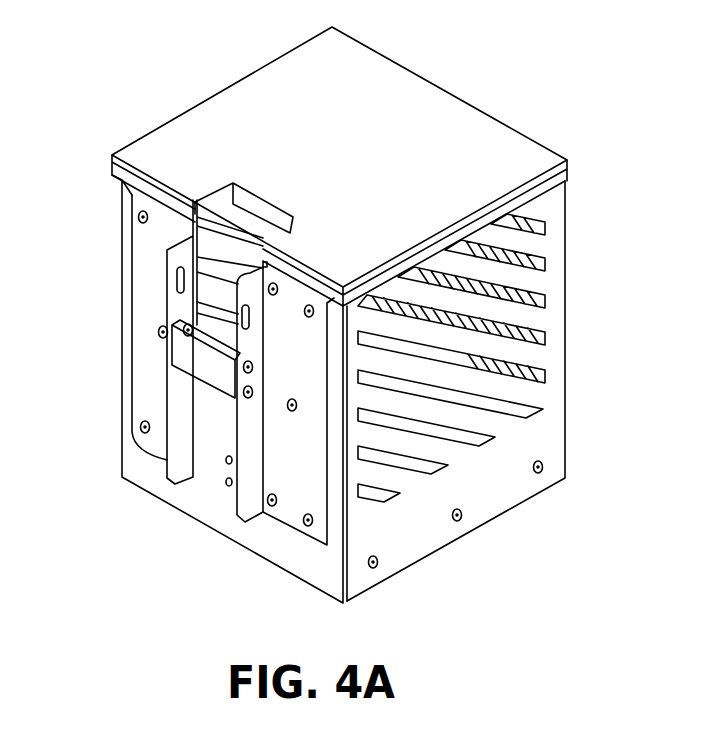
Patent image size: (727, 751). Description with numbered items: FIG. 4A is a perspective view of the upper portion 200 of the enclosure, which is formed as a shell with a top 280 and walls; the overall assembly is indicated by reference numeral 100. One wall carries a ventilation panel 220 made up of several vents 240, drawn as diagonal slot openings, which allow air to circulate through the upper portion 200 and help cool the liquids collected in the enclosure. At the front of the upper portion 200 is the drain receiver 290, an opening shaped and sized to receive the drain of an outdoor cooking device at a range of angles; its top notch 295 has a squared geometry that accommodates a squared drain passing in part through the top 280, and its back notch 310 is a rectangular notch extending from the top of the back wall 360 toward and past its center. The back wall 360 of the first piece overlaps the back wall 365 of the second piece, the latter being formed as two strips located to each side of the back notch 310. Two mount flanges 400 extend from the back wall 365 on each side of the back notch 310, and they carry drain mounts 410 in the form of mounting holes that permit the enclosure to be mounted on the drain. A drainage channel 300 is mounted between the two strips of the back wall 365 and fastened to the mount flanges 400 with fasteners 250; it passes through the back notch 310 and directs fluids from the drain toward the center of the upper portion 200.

The electronics assembly 100 is at (546, 55).
The upper portion 200 is at (549, 128).
The ventilation panel 220 is at (557, 353).
The vent 240 is at (547, 297).
The fasteners 250 is at (254, 392).
The top 280 is at (281, 57).
The drain receiver 290 is at (213, 196).
The top notch 295 is at (273, 207).
The drainage channel 300 is at (182, 355).
The back notch 310 is at (192, 302).
The back wall 360 is at (122, 480).
The back wall 365 is at (127, 297).
The mount flanges 400 is at (188, 244).
The drain mounts 410 is at (180, 270).